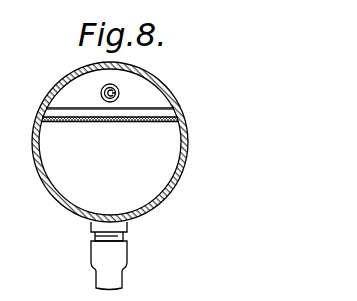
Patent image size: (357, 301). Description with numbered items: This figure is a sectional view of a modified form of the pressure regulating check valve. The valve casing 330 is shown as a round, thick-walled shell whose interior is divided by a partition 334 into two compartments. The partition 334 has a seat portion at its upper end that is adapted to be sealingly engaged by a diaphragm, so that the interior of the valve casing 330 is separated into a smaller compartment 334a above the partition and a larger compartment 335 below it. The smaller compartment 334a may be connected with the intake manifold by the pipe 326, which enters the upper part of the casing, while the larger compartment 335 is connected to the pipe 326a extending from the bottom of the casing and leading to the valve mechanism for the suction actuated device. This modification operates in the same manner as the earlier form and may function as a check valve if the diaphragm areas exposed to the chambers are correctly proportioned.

The valve casing 330 is at (181, 172).
The pipe 326 is at (119, 91).
The pipe 326a is at (115, 279).
The partition 334 is at (115, 122).
The compartment 334a is at (82, 96).
The compartment 335 is at (101, 176).